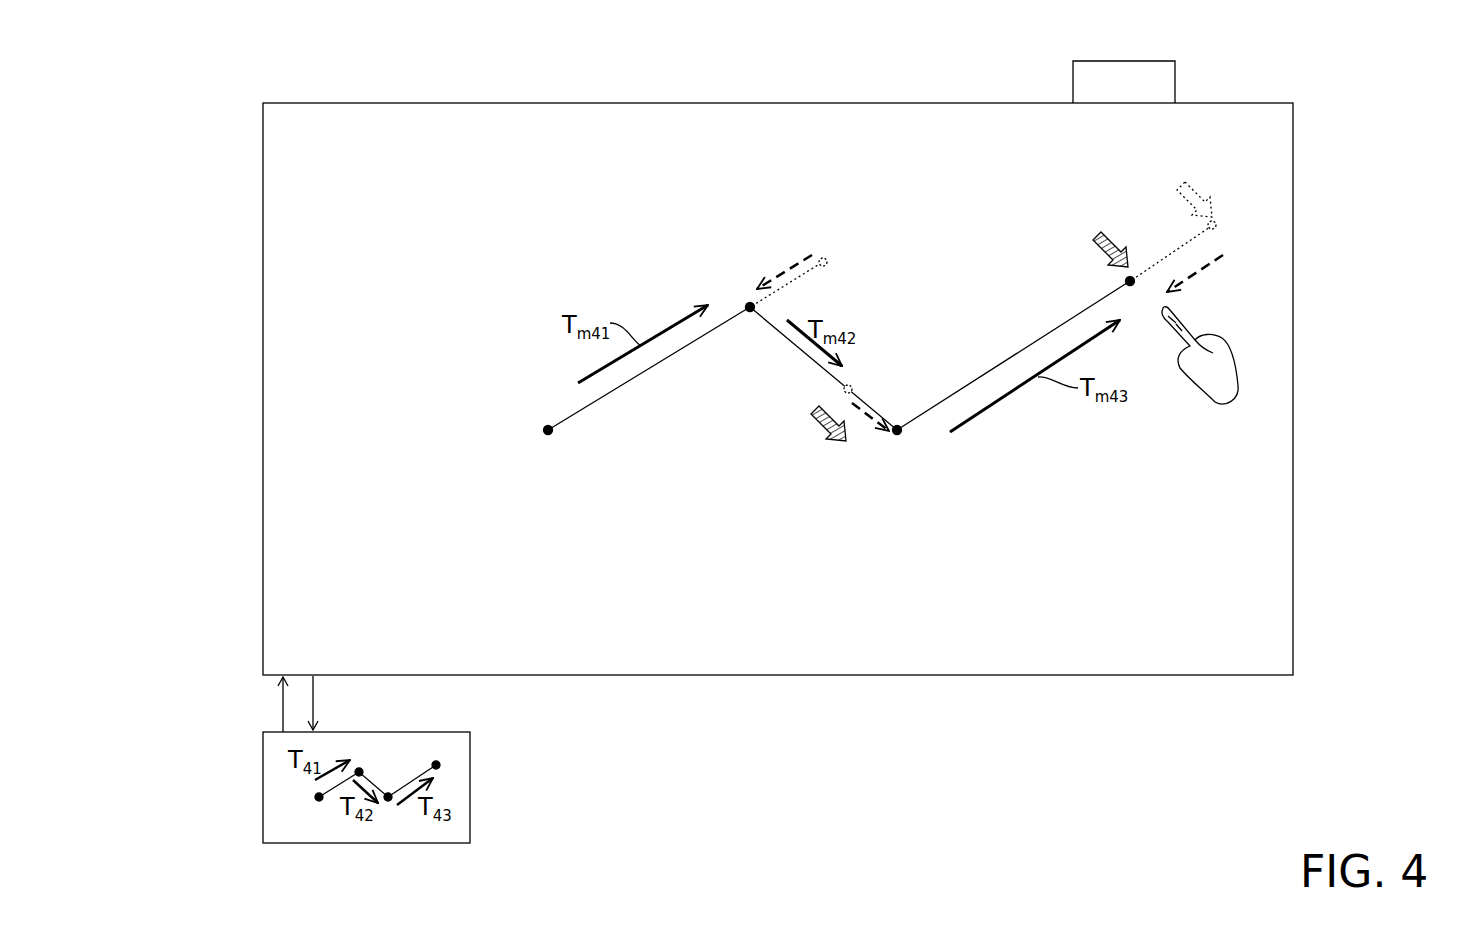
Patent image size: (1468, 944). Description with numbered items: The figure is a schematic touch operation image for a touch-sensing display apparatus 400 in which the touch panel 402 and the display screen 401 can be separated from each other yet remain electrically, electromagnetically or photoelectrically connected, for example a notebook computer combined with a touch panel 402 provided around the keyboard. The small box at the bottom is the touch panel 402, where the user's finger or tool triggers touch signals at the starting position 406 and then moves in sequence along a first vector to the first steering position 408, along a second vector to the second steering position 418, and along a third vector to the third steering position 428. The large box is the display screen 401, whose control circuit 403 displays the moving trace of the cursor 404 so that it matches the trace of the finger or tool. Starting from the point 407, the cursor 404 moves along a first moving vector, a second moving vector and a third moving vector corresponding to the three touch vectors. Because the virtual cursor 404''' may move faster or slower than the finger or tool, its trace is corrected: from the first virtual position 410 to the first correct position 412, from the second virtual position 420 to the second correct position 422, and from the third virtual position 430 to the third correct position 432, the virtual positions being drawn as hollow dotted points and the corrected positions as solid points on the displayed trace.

The touch-sensing display apparatus 400 is at (232, 57).
The display screen 401 is at (1262, 147).
The touch panel 402 is at (470, 822).
The control circuit 403 is at (1145, 97).
The cursor 404 is at (972, 335).
The virtual cursor 404''' is at (1211, 173).
The starting position 406 is at (316, 797).
The cursor start point 407 is at (544, 431).
The first steering position 408 is at (360, 769).
The first virtual position 410 is at (824, 257).
The first correct position 412 is at (747, 304).
The second steering position 418 is at (388, 801).
The second virtual position 420 is at (850, 384).
The second correct position 422 is at (897, 434).
The third steering position 428 is at (439, 765).
The third virtual position 430 is at (1216, 226).
The third correct position 432 is at (1133, 285).